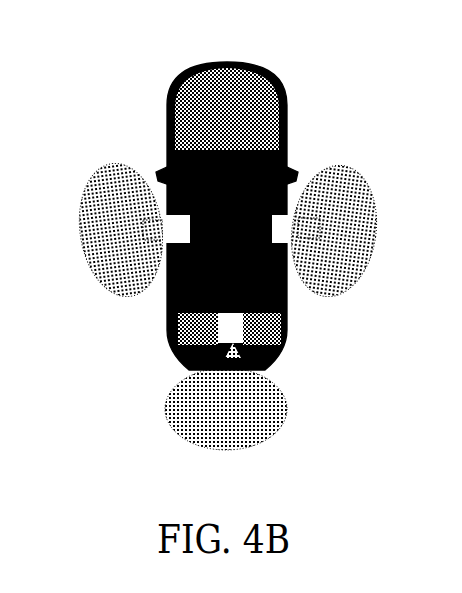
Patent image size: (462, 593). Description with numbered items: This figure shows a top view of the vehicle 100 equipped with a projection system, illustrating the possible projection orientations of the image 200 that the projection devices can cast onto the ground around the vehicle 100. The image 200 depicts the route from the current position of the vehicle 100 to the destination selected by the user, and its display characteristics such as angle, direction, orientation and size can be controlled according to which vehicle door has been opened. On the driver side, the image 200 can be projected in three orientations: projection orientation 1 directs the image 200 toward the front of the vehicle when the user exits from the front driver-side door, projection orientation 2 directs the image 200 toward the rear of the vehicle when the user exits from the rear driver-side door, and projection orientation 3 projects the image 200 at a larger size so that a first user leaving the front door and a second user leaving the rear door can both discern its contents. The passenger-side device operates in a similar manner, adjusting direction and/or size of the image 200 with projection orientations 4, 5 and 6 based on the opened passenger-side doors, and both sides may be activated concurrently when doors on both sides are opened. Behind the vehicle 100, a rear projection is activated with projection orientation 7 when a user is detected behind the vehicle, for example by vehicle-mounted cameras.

The vehicle 100 is at (267, 54).
The image 200 is at (91, 274).
The projection orientation # 1 is at (115, 198).
The projection orientation # 2 is at (117, 275).
The projection orientation # 3 is at (107, 232).
The projection orientation # 4 is at (337, 203).
The projection orientation # 5 is at (340, 275).
The projection orientation # 6 is at (343, 235).
The projection orientation # 7 is at (223, 403).